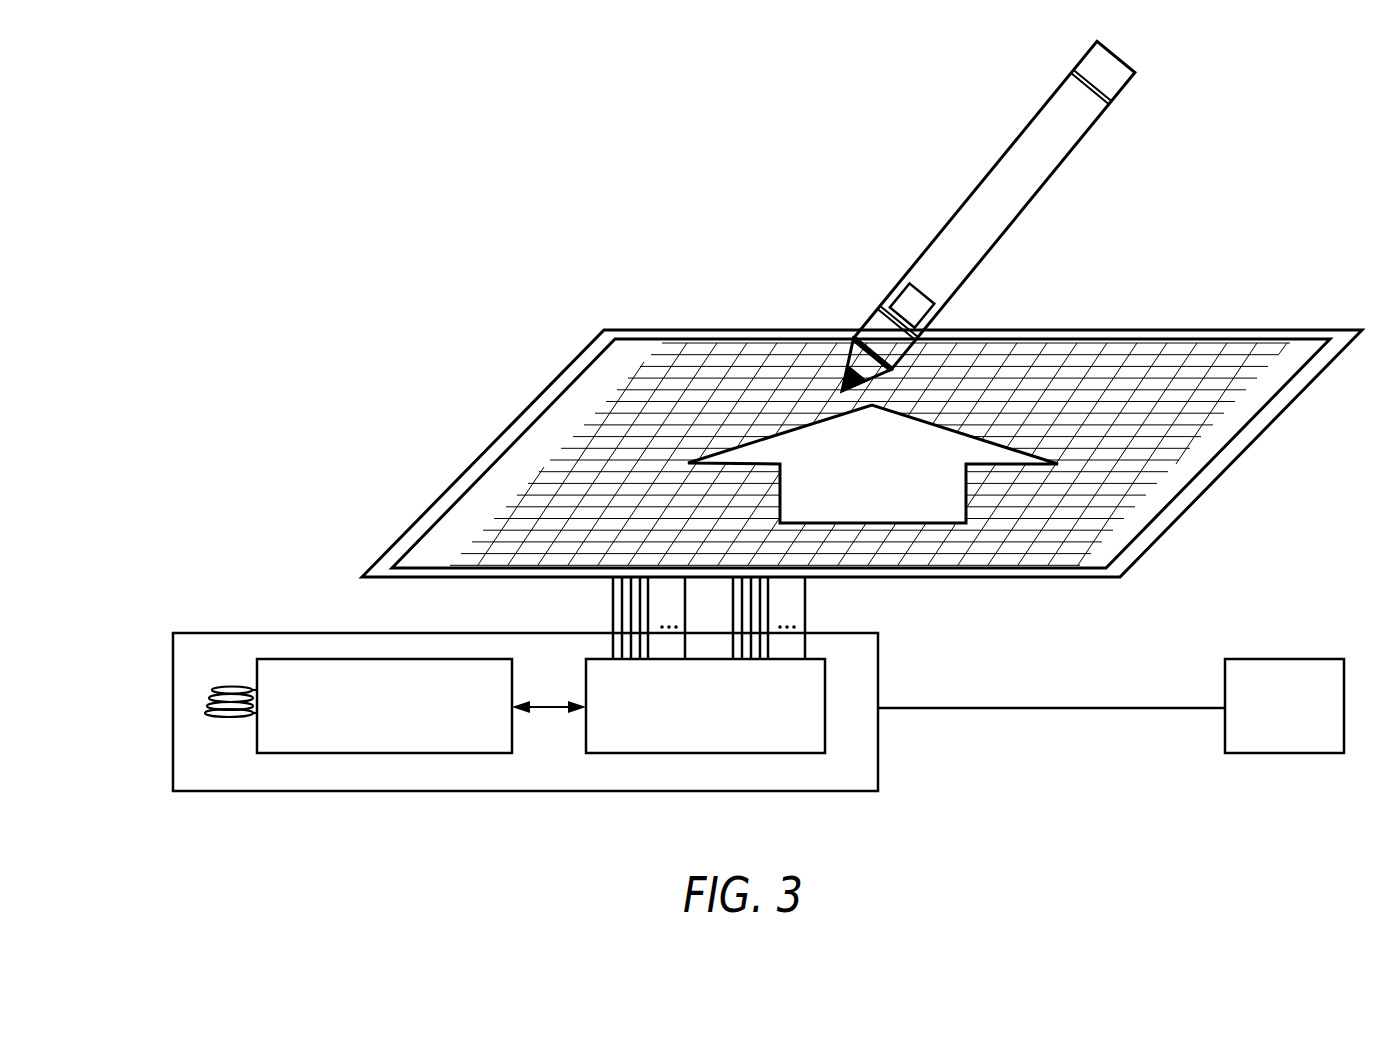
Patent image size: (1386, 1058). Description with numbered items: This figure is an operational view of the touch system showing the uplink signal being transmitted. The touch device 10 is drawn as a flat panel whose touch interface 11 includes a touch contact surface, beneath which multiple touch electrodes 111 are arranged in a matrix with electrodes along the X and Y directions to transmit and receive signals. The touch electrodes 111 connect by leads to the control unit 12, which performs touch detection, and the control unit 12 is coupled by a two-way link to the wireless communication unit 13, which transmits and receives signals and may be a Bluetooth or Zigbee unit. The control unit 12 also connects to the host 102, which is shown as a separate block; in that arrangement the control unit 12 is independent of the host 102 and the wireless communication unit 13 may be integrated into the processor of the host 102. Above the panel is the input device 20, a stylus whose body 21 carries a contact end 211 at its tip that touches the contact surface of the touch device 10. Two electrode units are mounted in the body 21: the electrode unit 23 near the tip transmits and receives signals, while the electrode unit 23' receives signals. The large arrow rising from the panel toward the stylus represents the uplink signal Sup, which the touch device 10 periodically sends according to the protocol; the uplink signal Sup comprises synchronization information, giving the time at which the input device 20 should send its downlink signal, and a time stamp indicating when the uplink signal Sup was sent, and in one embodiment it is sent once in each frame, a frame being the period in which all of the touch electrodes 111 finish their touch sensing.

The touch device 10 is at (448, 475).
The touch interface 11 is at (1158, 340).
The touch electrodes 111 is at (1257, 350).
The control unit 12 is at (705, 753).
The wireless communication unit 13 is at (378, 753).
The host 102 is at (1283, 659).
The input device 20 is at (943, 216).
The body 21 is at (935, 253).
The contact end 211 is at (840, 390).
The electrode unit 23 is at (856, 333).
The electrode unit 23' is at (948, 314).
The uplink signal Sup is at (967, 497).